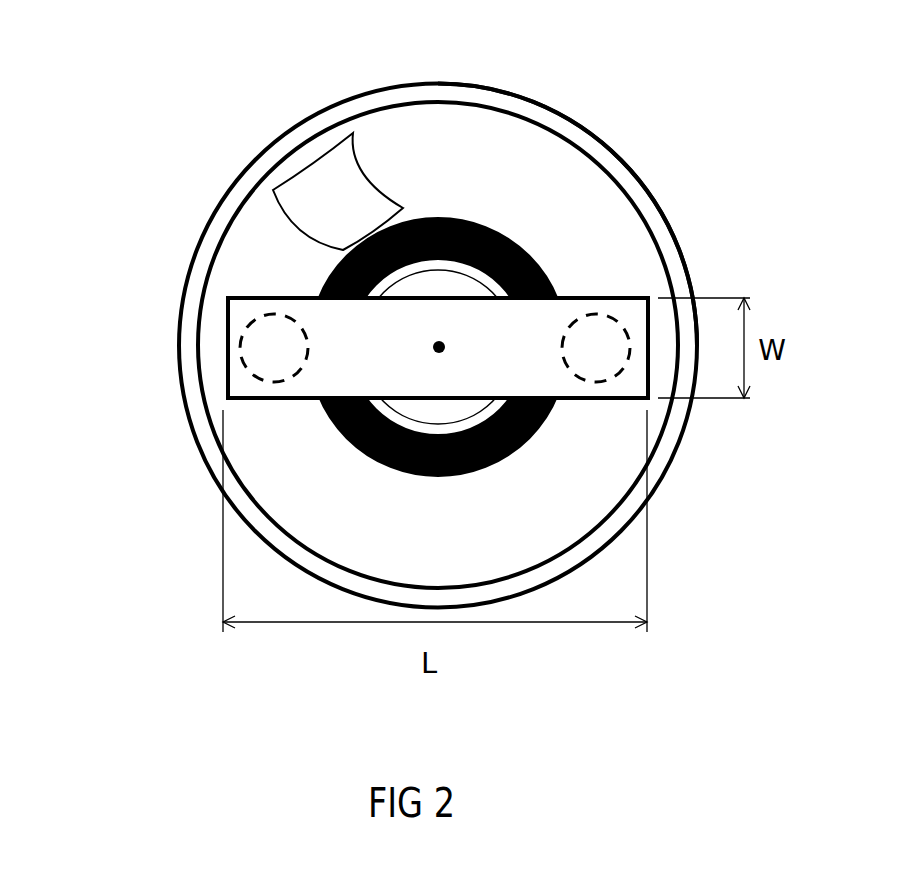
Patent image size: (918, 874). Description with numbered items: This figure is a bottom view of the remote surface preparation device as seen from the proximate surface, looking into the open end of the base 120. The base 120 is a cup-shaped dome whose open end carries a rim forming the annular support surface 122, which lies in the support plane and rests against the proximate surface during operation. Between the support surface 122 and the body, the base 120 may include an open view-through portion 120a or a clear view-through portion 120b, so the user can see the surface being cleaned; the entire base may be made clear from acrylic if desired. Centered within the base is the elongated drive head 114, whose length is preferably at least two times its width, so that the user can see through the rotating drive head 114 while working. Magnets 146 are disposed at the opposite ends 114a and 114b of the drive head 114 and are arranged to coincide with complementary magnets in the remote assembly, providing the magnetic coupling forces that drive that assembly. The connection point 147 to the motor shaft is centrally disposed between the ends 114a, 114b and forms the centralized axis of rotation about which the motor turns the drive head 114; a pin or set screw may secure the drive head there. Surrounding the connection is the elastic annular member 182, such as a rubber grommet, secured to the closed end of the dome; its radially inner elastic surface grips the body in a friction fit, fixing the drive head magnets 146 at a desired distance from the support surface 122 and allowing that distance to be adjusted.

The drive head 114 is at (300, 294).
The first end of drive head 114a is at (250, 401).
The second end of drive head 114b is at (628, 402).
The base 120 is at (185, 283).
The open view-through portion 120a is at (325, 147).
The clear view-through portion 120b is at (525, 140).
The support surface 122 is at (188, 373).
The magnet 146 is at (587, 313).
The connection point 147 is at (433, 352).
The elastic annular member 182 is at (480, 223).